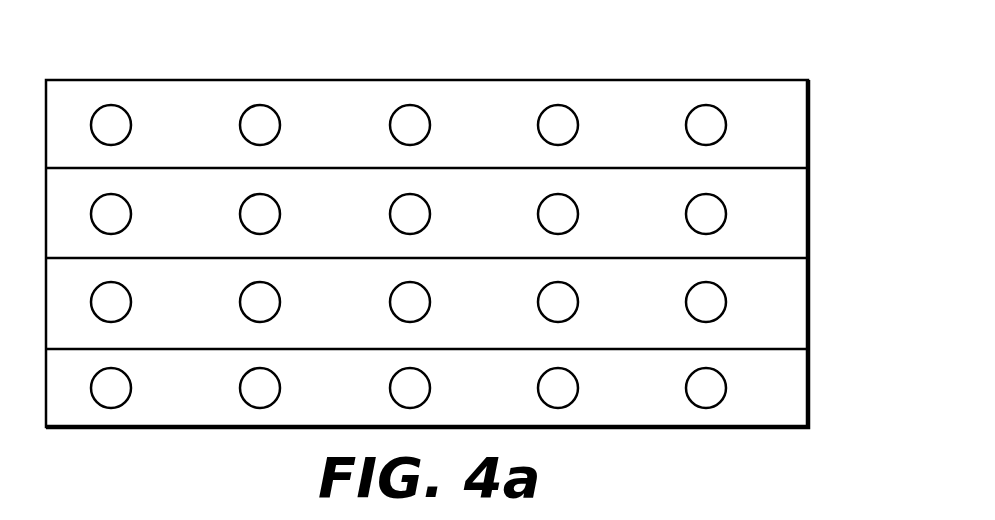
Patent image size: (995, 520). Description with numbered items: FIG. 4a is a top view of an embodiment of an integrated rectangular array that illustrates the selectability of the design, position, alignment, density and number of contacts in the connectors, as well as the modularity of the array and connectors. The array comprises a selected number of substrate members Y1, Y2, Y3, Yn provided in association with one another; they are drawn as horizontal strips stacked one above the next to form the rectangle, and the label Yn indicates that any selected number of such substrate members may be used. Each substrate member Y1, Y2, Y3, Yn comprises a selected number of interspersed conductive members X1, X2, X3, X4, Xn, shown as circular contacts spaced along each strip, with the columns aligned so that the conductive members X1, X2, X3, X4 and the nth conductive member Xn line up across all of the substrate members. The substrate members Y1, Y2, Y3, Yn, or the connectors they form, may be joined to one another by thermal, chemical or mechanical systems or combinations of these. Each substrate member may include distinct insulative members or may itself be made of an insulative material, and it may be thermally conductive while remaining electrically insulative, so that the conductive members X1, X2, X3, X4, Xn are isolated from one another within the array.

The conductive member X1 is at (112, 108).
The conductive member X2 is at (261, 108).
The conductive member X3 is at (411, 108).
The conductive member X4 is at (559, 108).
The conductive member Xn is at (707, 108).
The substrate member Y1 is at (792, 128).
The substrate member Y2 is at (792, 217).
The substrate member Y3 is at (792, 305).
The substrate member Yn is at (792, 391).